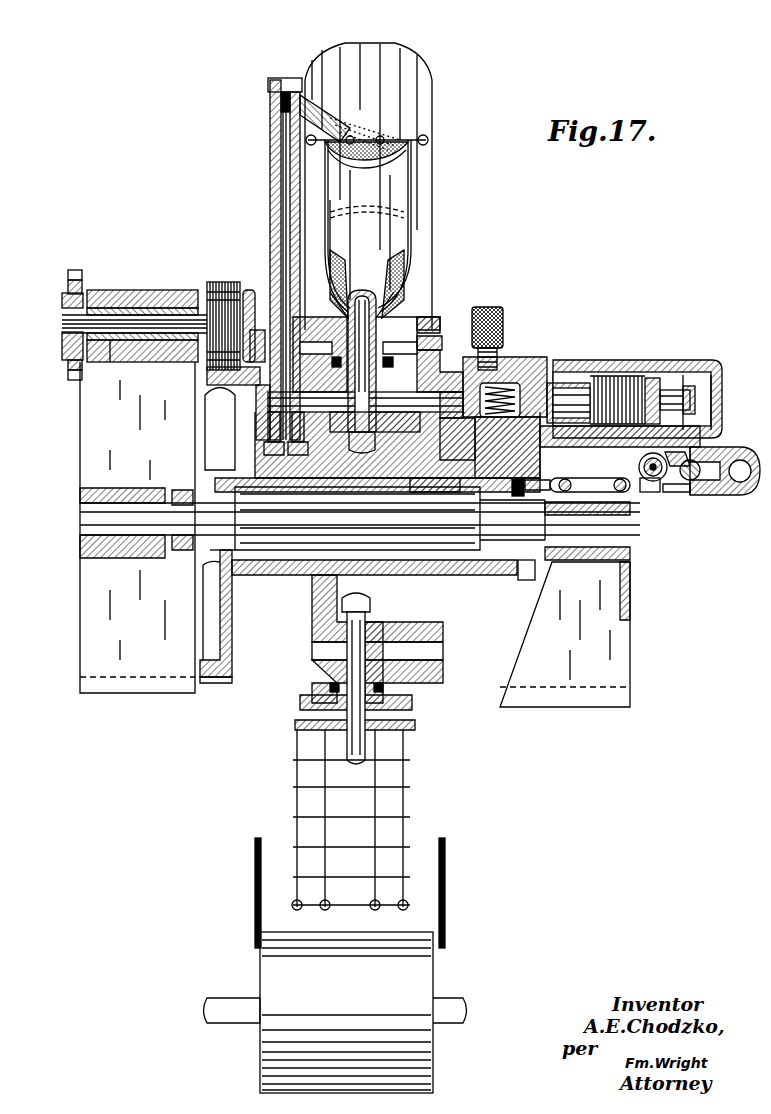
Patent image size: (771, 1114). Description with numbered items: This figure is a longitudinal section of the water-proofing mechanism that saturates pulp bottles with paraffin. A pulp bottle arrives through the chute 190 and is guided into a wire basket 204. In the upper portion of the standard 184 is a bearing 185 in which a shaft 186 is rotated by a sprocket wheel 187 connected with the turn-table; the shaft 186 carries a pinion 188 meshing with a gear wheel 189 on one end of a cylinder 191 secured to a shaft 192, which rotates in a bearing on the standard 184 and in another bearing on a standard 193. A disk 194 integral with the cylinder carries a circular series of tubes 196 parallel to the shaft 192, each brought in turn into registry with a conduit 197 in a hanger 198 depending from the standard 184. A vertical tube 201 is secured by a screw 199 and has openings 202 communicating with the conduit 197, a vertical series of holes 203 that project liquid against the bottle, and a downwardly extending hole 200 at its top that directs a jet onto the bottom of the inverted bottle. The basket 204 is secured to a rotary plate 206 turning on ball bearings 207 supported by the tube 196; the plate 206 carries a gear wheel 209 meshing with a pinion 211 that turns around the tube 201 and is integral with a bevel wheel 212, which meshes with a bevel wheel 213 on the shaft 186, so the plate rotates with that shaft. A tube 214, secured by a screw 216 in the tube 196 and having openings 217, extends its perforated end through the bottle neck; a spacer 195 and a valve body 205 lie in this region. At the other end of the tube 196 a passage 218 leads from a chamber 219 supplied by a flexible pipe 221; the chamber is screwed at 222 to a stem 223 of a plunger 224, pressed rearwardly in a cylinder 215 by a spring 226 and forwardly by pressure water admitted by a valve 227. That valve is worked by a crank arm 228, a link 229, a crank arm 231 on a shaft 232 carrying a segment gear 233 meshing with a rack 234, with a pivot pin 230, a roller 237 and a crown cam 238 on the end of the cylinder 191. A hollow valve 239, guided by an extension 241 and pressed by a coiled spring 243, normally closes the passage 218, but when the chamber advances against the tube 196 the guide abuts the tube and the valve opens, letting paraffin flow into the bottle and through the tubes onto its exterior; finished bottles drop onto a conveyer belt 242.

The standard 184 is at (137, 527).
The bearing 185 is at (160, 292).
The shaft 186 is at (148, 368).
The sprocket wheel 187 is at (66, 365).
The pinion 188 is at (224, 282).
The gear wheel 189 is at (218, 683).
The chute 190 is at (368, 186).
The cylinder 191 is at (270, 576).
The shaft 192 is at (360, 518).
The standard 193 is at (565, 634).
The disk 194 is at (312, 605).
The spacer 195 is at (376, 438).
The tube 196 is at (320, 648).
The conduit 197 is at (302, 445).
The hanger 198 is at (270, 446).
The screw 199 is at (262, 424).
The downwardly extending hole 200 is at (325, 115).
The vertical tube 201 is at (270, 215).
The openings 202 is at (258, 403).
The holes 203 is at (292, 248).
The wire basket 204 is at (430, 160).
The valve body 205 is at (377, 404).
The rotary plate 206 is at (440, 322).
The ball bearings 207 is at (393, 362).
The gear wheel 209 is at (442, 345).
The pinion 211 is at (345, 295).
The bevel wheel 212 is at (250, 360).
The bevel wheel 213 is at (250, 292).
The tube 214 is at (362, 292).
The cylinder 215 is at (700, 382).
The screw 216 is at (376, 447).
The openings 217 is at (365, 402).
The passage 218 is at (466, 430).
The chamber 219 is at (478, 450).
The flexible pipe 221 is at (503, 322).
The screw connection 222 is at (578, 462).
The stem 223 is at (568, 403).
The plunger 224 is at (660, 376).
The spring 226 is at (615, 376).
The valve 227 is at (705, 452).
The crank arm 228 is at (672, 470).
The link 229 is at (675, 480).
The pivot pin 230 is at (644, 470).
The crank arm 231 is at (650, 462).
The shaft 232 is at (680, 495).
The segment gear 233 is at (652, 492).
The rack 234 is at (655, 490).
The roller 237 is at (520, 478).
The crown cam 238 is at (528, 580).
The hollow valve 239 is at (514, 372).
The extension 241 is at (488, 307).
The conveyer belt 242 is at (362, 932).
The coiled spring 243 is at (545, 375).